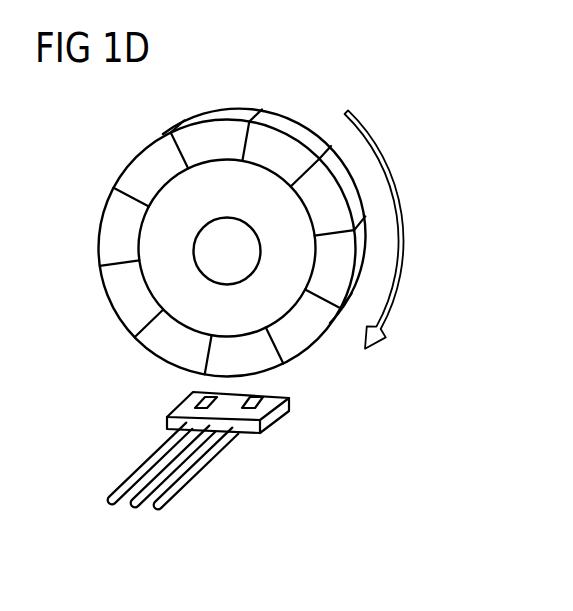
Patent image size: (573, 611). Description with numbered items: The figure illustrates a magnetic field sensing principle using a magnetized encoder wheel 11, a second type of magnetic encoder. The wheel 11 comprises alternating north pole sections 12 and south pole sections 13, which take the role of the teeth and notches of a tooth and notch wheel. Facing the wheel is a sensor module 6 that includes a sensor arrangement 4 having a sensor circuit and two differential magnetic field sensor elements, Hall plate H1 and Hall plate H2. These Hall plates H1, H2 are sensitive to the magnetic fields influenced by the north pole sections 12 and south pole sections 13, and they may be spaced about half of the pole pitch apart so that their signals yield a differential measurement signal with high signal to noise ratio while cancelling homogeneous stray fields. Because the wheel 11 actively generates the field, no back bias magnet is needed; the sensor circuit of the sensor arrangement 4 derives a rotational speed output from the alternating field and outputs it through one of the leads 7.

The magnetized encoder wheel 11 is at (190, 185).
The north pole sections 12 is at (133, 175).
The south pole sections 13 is at (100, 244).
The sensor arrangement 4 is at (278, 421).
The sensor module 6 is at (149, 410).
The leads 7 is at (170, 513).
The Hall plate H1 is at (200, 393).
The Hall plate H2 is at (262, 398).